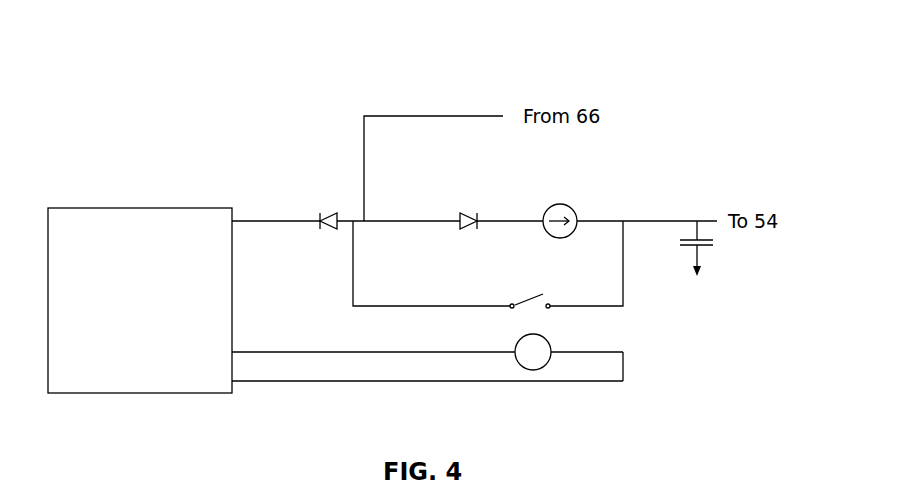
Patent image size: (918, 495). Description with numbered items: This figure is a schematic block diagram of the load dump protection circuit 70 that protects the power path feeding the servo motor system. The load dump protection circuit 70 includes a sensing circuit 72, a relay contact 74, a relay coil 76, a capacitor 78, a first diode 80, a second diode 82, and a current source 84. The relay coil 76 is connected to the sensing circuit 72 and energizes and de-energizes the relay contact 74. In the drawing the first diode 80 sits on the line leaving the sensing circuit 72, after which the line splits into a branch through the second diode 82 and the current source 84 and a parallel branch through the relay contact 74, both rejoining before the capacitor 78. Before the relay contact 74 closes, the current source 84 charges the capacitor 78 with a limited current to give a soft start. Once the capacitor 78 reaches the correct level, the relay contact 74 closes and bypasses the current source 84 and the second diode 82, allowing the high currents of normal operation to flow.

The load dump protection circuit 70 is at (84, 98).
The sensing circuit 72 is at (140, 362).
The relay contact 74 is at (533, 312).
The relay coil 76 is at (541, 356).
The capacitor 78 is at (698, 247).
The first diode 80 is at (336, 215).
The second diode 82 is at (465, 215).
The current source 84 is at (565, 208).